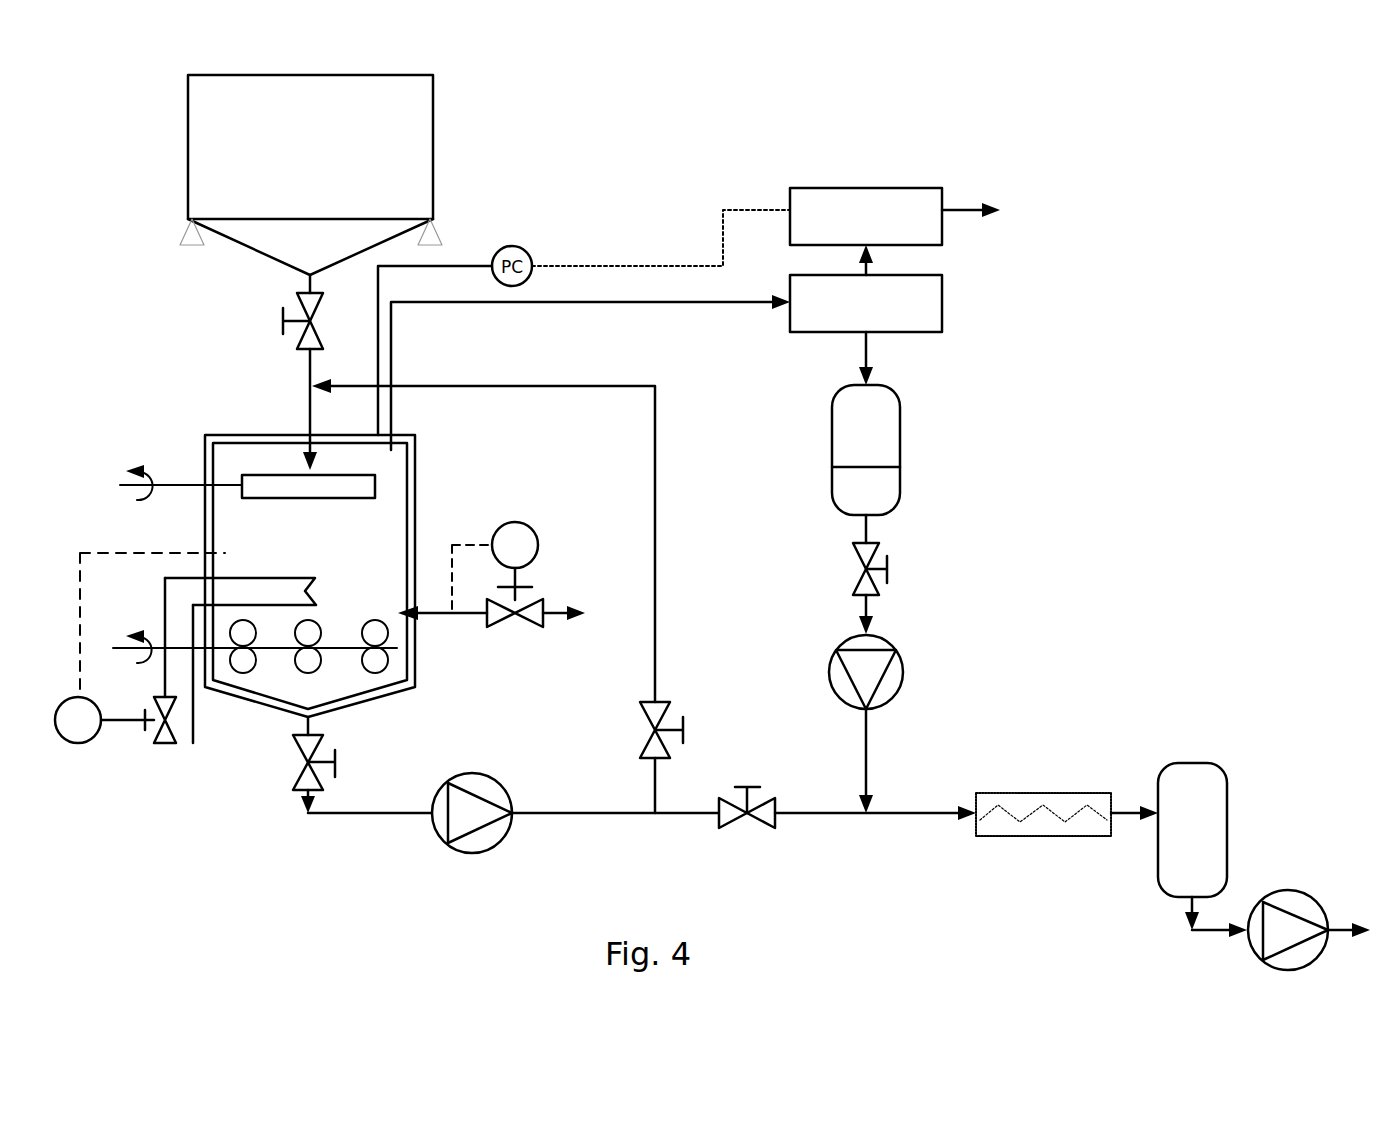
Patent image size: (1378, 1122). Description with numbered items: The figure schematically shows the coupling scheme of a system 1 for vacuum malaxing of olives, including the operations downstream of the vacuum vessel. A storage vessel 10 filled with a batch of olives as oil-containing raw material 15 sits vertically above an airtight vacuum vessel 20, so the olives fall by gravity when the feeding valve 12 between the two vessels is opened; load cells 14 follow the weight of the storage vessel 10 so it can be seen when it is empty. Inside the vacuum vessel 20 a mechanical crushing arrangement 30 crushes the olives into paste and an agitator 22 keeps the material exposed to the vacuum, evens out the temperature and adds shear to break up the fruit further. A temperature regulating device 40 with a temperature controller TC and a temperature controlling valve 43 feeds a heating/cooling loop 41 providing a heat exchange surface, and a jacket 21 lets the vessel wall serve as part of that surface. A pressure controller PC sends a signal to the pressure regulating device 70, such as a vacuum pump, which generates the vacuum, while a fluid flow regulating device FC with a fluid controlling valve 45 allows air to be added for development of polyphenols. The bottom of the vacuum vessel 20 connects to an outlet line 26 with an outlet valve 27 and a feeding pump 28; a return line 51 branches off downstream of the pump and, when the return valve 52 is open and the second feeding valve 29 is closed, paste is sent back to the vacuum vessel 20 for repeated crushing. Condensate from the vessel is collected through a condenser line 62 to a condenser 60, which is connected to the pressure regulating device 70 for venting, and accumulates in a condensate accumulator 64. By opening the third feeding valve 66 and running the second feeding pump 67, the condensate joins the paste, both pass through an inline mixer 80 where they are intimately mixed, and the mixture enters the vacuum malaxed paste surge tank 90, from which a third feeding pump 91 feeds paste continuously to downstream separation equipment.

The system 1 is at (672, 181).
The storage vessel 10 is at (188, 158).
The feeding valve 12 is at (283, 321).
The load cells 14 is at (185, 238).
The oil-containing raw material 15 is at (310, 147).
The vacuum vessel 20 is at (356, 576).
The jacket 21 is at (416, 468).
The agitator 22 is at (391, 672).
The outlet line 26 is at (360, 813).
The outlet valve 27 is at (328, 737).
The feeding pump 28 is at (488, 768).
The second feeding valve 29 is at (718, 830).
The mechanical crushing arrangement 30 is at (370, 502).
The temperature regulating device 40 is at (186, 572).
The heating/cooling loop 41 is at (282, 577).
The temperature controlling valve 43 is at (166, 746).
The fluid controlling valve 45 is at (528, 628).
The return line 51 is at (655, 540).
The return valve 52 is at (668, 698).
The condenser 60 is at (866, 315).
The condenser line 62 is at (537, 302).
The condensate accumulator 64 is at (900, 427).
The third feeding valve 66 is at (887, 556).
The second feeding pump 67 is at (898, 652).
The pressure regulating device 70 is at (895, 216).
The inline mixer 80 is at (1016, 793).
The vacuum malaxed paste surge tank 90 is at (1181, 767).
The third feeding pump 91 is at (1276, 892).